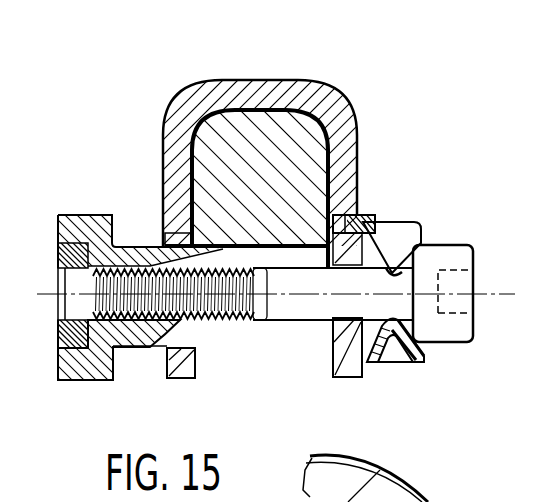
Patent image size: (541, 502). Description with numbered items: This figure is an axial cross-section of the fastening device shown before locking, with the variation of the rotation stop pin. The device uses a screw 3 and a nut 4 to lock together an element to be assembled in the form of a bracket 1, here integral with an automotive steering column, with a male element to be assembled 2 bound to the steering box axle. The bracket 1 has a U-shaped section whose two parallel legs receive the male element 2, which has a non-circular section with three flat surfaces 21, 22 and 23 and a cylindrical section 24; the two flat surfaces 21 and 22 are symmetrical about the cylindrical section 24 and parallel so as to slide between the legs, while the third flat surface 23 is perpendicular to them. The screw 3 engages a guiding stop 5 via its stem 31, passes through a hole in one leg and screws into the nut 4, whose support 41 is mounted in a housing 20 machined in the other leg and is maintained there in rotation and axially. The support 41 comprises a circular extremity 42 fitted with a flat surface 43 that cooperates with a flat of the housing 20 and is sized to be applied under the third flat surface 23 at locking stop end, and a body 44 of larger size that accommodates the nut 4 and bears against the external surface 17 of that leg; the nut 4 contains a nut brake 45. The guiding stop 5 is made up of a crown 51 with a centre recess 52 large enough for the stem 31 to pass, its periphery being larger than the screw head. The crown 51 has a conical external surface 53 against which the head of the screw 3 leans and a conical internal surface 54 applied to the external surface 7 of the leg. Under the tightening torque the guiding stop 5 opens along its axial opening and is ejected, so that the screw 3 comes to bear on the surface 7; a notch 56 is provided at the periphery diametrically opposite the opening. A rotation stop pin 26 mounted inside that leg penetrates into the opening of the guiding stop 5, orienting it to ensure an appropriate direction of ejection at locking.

The bracket 1 is at (201, 74).
The male element to be assembled 2 is at (255, 120).
The screw 3 is at (467, 320).
The nut 4 is at (57, 245).
The guiding stop 5 is at (381, 370).
The external surface 7 is at (368, 365).
The external surface 17 is at (163, 153).
The housing 20 is at (177, 228).
The flat surface 21 is at (167, 207).
The flat surface 22 is at (313, 200).
The third flat surface 23 is at (270, 250).
The cylindrical section 24 is at (312, 114).
The rotation stop pin 26 is at (366, 214).
The stem 31 is at (293, 307).
The support 41 is at (94, 384).
The circular extremity 42 is at (140, 347).
The flat surface 43 is at (163, 240).
The body 44 is at (82, 220).
The nut brake 45 is at (55, 318).
The crown 51 is at (390, 237).
The centre recess 52 is at (402, 280).
The external surface 53 is at (417, 347).
The internal surface 54 is at (333, 345).
The notch 56 is at (398, 355).